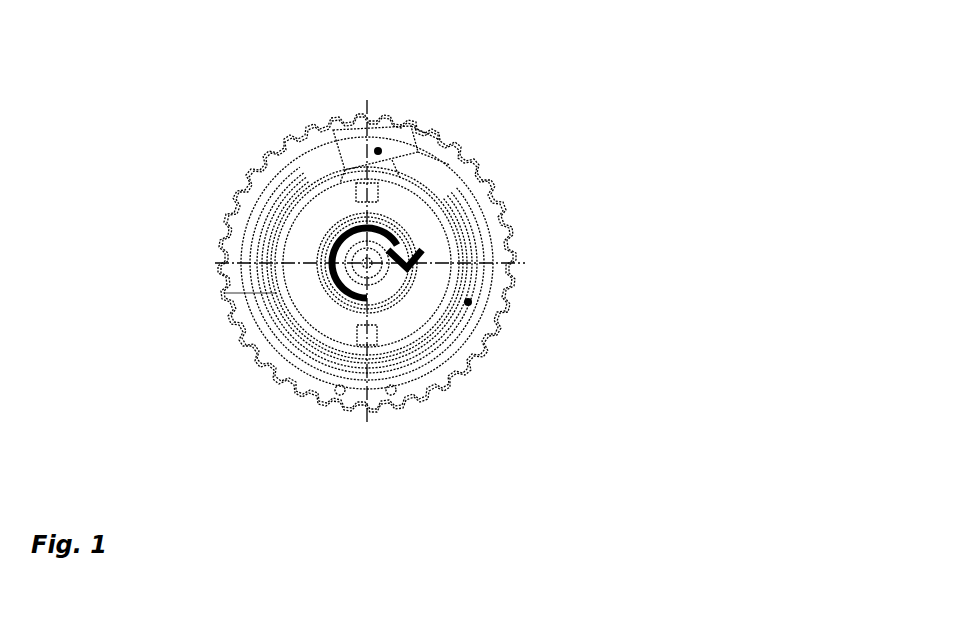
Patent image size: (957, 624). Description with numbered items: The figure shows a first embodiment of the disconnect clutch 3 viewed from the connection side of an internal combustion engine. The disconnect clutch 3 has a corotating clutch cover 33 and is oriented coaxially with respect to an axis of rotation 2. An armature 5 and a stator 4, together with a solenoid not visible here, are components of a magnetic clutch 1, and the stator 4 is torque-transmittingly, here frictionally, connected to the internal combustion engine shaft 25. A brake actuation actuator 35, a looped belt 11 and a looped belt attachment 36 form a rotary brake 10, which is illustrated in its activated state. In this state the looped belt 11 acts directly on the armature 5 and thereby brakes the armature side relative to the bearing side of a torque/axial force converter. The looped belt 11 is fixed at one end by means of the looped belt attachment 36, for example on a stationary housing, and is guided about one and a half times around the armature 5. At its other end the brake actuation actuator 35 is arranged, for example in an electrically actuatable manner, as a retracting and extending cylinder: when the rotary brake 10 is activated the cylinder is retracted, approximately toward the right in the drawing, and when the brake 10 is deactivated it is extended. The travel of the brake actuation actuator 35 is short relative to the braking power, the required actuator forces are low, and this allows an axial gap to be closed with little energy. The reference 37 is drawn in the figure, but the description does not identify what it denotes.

The magnetic clutch 1 is at (182, 264).
The axis of rotation 2 is at (368, 272).
The disconnect clutch 3 is at (543, 34).
The stator 4 is at (347, 313).
The armature 5 is at (282, 236).
The rotary brake 10 is at (584, 188).
The looped belt 11 is at (468, 259).
The internal combustion engine shaft 25 is at (400, 310).
The clutch cover 33 is at (344, 118).
The brake actuation actuator 35 is at (378, 151).
The looped belt attachment 36 is at (468, 302).
The inner ring 37 is at (342, 220).